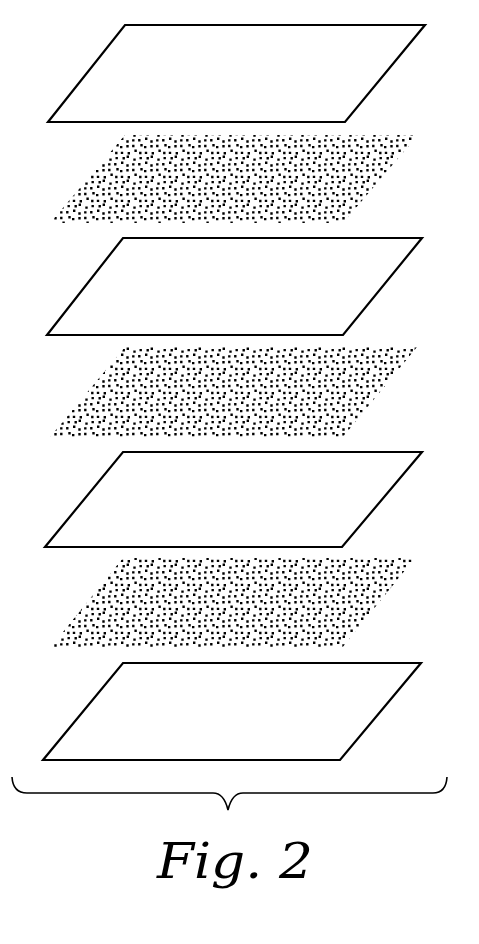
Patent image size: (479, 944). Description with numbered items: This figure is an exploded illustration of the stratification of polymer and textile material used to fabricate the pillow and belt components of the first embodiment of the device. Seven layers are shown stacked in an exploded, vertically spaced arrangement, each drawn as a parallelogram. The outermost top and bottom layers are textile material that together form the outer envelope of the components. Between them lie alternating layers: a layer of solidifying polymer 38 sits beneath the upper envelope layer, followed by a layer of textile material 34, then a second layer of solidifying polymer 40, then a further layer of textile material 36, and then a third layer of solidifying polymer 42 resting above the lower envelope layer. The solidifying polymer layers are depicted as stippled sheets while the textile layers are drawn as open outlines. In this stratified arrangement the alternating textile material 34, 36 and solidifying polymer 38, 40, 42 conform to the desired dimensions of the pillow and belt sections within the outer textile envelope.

The textile material layer 34 is at (388, 280).
The textile material layer 36 is at (387, 495).
The solidifying polymer layer 38 is at (390, 162).
The solidifying polymer layer 40 is at (386, 375).
The solidifying polymer layer 42 is at (384, 587).